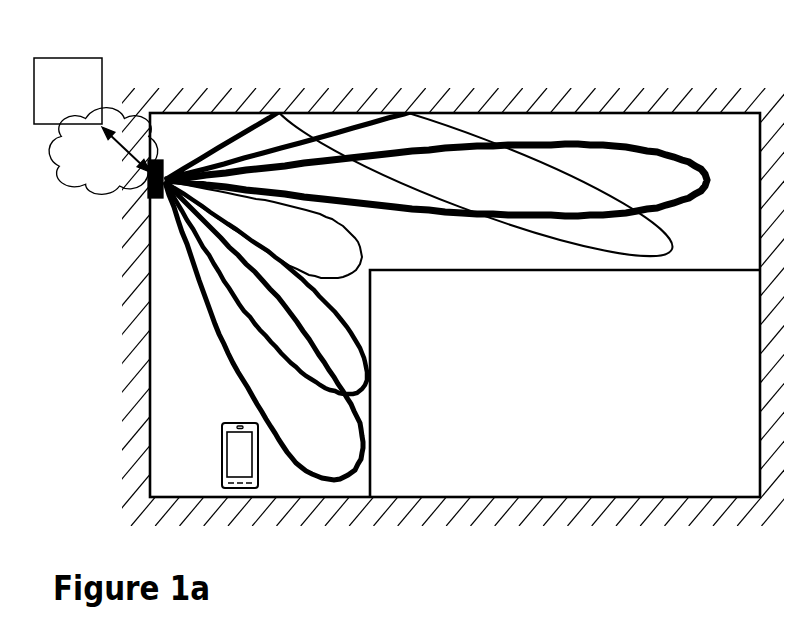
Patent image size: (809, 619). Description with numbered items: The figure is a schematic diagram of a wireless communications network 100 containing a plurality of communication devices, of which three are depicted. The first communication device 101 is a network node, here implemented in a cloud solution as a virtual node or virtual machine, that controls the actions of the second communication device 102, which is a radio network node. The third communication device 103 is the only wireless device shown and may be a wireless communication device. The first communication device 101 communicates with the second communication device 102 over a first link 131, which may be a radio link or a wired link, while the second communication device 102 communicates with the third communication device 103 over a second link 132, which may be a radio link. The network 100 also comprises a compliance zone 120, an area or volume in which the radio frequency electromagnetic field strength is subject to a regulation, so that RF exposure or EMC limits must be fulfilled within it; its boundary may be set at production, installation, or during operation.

The wireless communications network 100 is at (404, 283).
The first communication device 101 is at (57, 58).
The second communication device 102 is at (148, 204).
The third communication device 103 is at (237, 422).
The compliance zone 120 is at (677, 270).
The first link 131 is at (124, 158).
The second link 132 is at (223, 340).